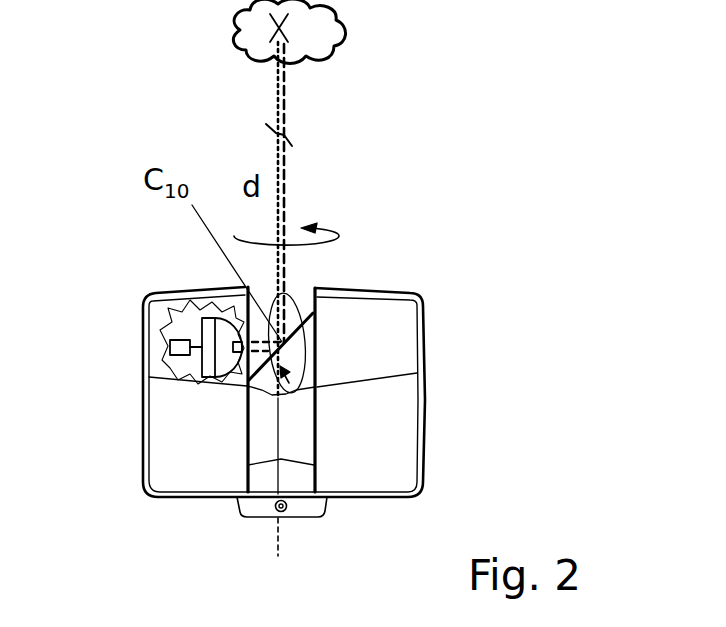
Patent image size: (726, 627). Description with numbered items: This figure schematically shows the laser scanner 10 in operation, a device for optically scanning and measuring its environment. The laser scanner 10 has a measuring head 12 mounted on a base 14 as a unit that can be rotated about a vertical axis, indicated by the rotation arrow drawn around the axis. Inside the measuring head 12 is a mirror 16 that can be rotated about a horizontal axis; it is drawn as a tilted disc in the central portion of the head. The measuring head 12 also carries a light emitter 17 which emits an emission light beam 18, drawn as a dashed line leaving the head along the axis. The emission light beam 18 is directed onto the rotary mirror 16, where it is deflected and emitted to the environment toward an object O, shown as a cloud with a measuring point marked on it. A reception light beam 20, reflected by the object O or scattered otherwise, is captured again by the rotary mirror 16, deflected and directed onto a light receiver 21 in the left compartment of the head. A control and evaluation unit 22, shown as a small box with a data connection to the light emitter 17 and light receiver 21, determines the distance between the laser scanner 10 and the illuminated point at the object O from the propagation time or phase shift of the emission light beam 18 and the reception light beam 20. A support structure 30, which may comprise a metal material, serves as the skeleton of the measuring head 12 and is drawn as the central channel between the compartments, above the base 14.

The laser scanner 10 is at (297, 416).
The measuring head 12 is at (428, 390).
The base 14 is at (308, 505).
The mirror 16 is at (275, 378).
The light emitter 17 is at (238, 352).
The emission light beam 18 is at (290, 178).
The reception light beam 20 is at (277, 92).
The light receiver 21 is at (207, 368).
The control and evaluation unit 22 is at (170, 348).
The support structure 30 is at (297, 424).
The object O is at (337, 33).